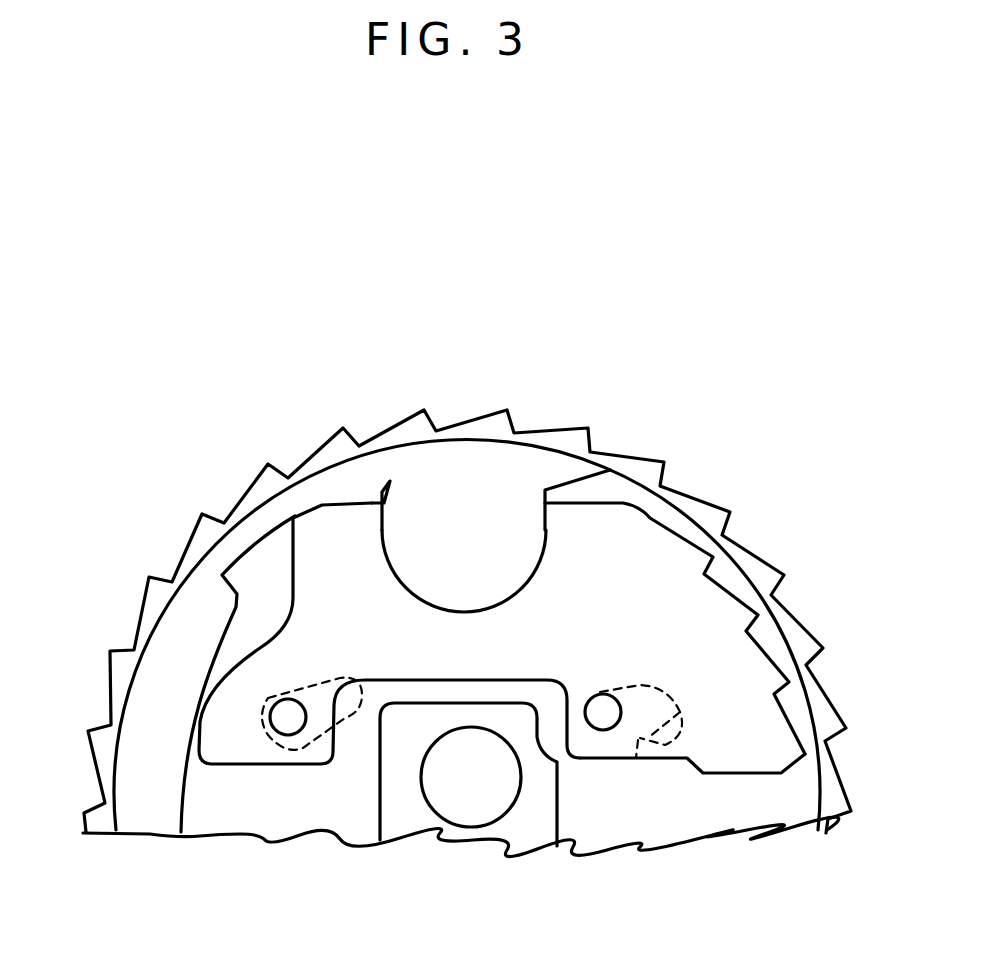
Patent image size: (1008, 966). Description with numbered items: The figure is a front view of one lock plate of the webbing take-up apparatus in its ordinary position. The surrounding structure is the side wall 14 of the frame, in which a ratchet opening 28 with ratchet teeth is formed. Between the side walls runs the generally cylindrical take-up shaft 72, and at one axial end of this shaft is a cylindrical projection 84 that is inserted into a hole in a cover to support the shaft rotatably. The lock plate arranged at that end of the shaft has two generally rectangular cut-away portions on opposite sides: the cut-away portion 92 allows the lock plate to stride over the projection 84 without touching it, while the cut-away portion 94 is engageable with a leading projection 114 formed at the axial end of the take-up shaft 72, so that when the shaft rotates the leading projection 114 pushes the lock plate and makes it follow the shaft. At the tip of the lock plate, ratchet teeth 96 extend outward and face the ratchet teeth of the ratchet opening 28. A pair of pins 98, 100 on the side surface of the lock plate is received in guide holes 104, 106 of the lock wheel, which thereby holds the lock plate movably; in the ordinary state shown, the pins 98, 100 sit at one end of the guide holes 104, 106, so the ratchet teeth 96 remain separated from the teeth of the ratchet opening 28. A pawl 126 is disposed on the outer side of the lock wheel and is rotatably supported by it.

The side wall 14 is at (502, 324).
The ratchet opening 28 is at (823, 702).
The take-up shaft 72 is at (117, 751).
The cylindrical projection 84 is at (470, 800).
The cut-away portion 92 is at (398, 684).
The cut-away portion 94 is at (413, 611).
The ratchet teeth 96 is at (750, 605).
The pin 98 is at (282, 714).
The pin 100 is at (602, 718).
The guide hole 104 is at (320, 745).
The guide hole 106 is at (640, 738).
The leading projection 114 is at (491, 482).
The pawl 126 is at (684, 760).